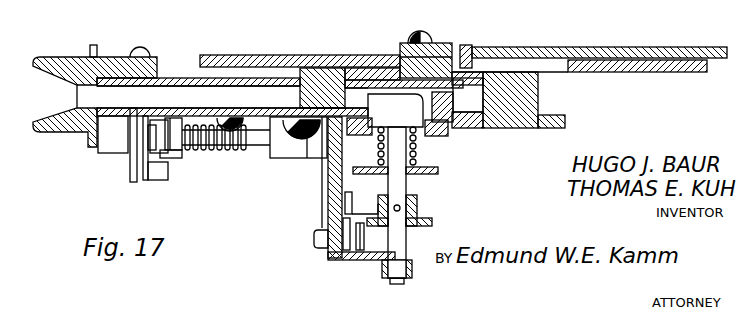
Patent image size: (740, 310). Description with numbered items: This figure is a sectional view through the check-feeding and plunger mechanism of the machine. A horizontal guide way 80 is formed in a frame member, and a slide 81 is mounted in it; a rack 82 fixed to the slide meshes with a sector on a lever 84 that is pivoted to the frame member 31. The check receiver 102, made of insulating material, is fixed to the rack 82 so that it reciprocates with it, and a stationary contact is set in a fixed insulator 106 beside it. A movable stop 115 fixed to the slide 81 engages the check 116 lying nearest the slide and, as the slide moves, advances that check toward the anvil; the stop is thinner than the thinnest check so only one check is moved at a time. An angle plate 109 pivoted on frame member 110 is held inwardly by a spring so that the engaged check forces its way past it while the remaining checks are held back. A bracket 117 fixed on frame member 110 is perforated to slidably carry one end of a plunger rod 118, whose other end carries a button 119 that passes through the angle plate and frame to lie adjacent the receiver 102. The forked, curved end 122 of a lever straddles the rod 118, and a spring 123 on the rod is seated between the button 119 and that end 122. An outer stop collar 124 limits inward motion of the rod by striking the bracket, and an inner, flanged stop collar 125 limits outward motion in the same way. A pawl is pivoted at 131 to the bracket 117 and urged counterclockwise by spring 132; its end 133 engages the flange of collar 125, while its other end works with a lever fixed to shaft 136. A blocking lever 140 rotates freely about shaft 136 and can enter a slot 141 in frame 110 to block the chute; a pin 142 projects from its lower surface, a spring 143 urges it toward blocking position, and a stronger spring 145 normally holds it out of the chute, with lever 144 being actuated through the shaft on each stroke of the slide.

The frame member 31 is at (614, 64).
The horizontal guide way 80 is at (314, 72).
The slide 81 is at (358, 76).
The rack 82 is at (442, 46).
The lever 84 is at (553, 48).
The check receiver 102 is at (448, 98).
The fixed insulator 106 is at (516, 126).
The angle plate 109 is at (434, 136).
The frame member 110 is at (230, 108).
The movable stop 115 is at (470, 48).
The check 116 is at (356, 97).
The bracket 117 is at (366, 262).
The plunger rod 118 is at (406, 191).
The button 119 is at (403, 120).
The forked curved end 122 is at (432, 172).
The spring 123 is at (380, 146).
The outer stop collar 124 is at (392, 280).
The inner flanged stop collar 125 is at (420, 214).
The pawl pivot 131 is at (316, 238).
The spring 132 is at (340, 256).
The pawl end 133 is at (366, 212).
The shaft 136 is at (222, 151).
The blocking lever 140 is at (128, 158).
The slot 141 is at (133, 110).
The pin 142 is at (158, 175).
The spring 143 is at (150, 180).
The lever 144 is at (168, 157).
The spring 145 is at (268, 152).